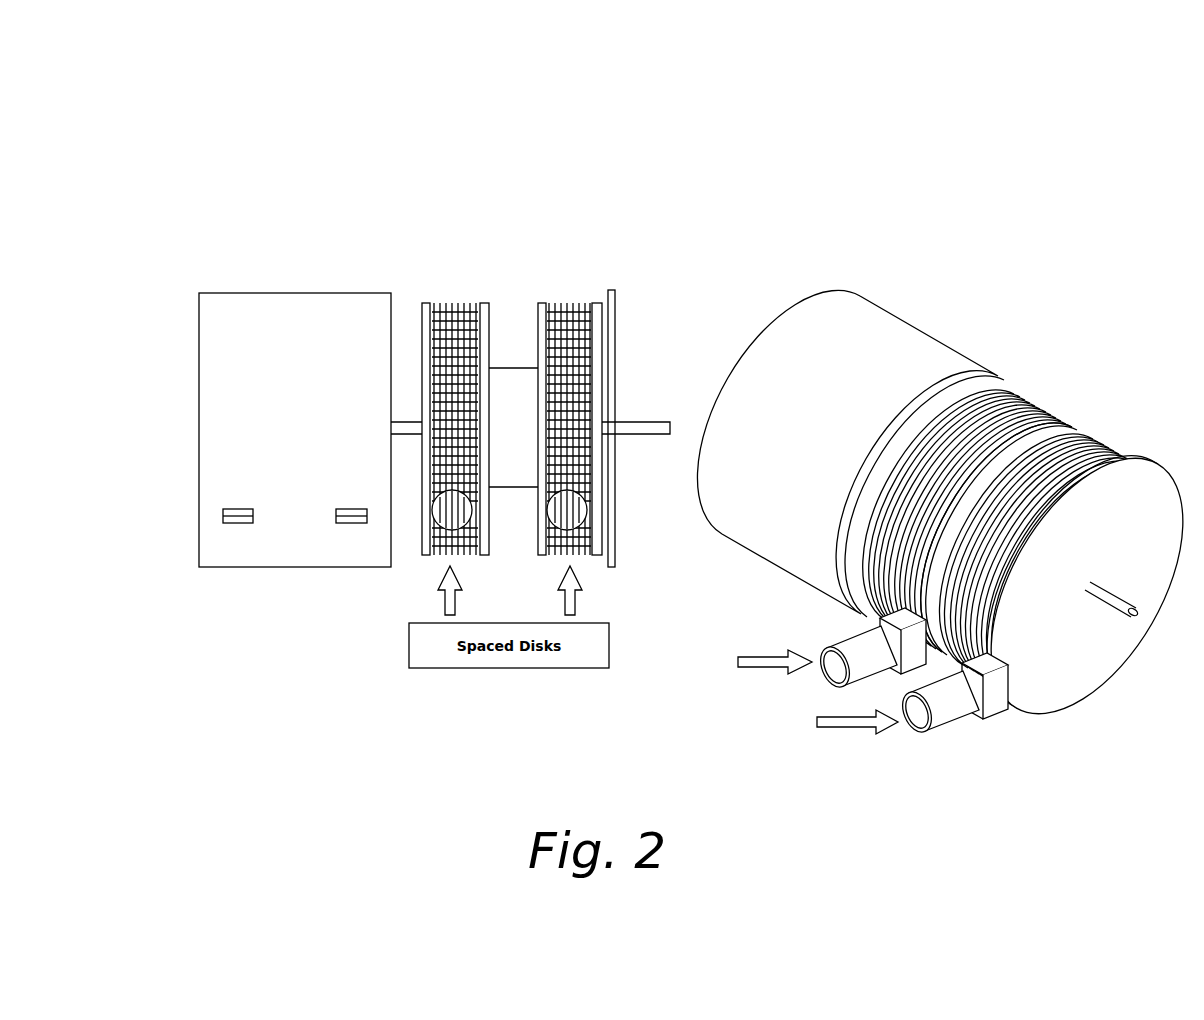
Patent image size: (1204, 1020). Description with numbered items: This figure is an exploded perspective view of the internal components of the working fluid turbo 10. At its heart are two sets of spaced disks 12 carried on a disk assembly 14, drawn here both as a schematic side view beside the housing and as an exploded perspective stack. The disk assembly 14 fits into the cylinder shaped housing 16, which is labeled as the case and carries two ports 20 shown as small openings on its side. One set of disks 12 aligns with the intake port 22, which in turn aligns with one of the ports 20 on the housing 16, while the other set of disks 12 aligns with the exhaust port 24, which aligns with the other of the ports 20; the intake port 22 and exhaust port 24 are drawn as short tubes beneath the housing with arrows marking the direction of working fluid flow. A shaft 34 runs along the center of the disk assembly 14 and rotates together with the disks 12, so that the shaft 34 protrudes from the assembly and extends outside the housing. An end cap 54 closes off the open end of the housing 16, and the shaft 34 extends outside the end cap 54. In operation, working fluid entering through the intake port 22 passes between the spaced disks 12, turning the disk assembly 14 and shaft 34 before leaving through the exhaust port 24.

The working fluid turbo 10 is at (1060, 170).
The spaced disks 12 is at (452, 300).
The disk assembly 14 is at (534, 264).
The housing 16 is at (241, 293).
The ports 20 is at (315, 612).
The intake port 22 is at (922, 735).
The exhaust port 24 is at (826, 675).
The shaft 34 is at (652, 415).
The end cap 54 is at (616, 298).